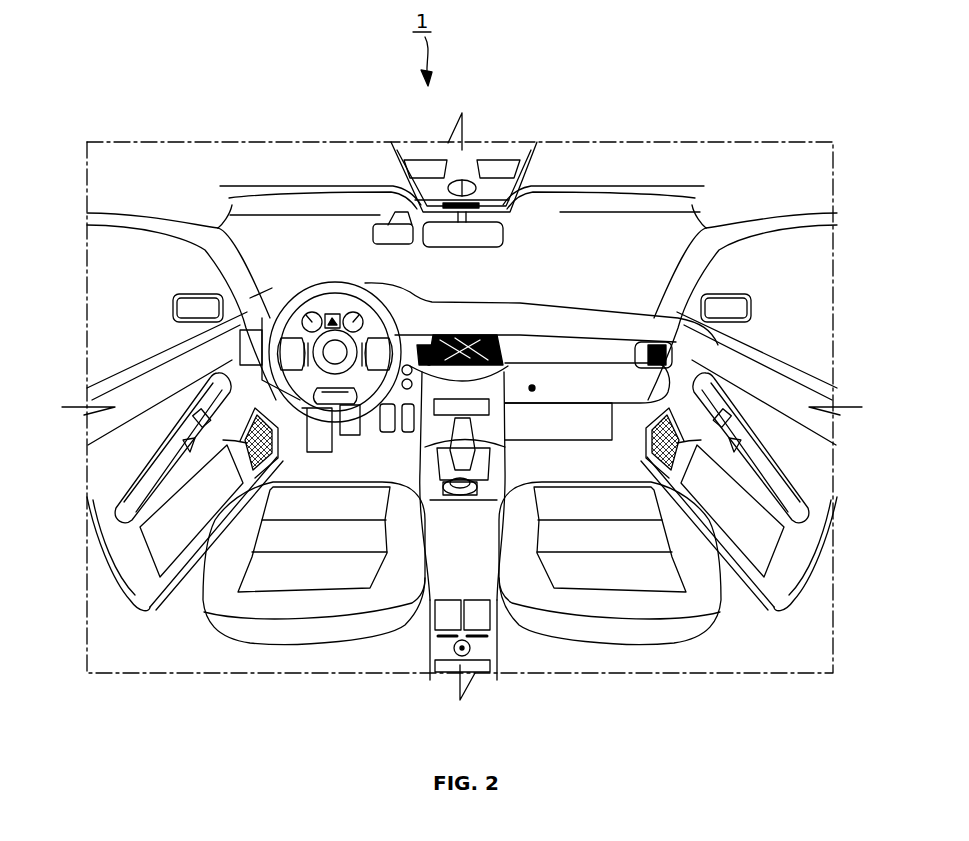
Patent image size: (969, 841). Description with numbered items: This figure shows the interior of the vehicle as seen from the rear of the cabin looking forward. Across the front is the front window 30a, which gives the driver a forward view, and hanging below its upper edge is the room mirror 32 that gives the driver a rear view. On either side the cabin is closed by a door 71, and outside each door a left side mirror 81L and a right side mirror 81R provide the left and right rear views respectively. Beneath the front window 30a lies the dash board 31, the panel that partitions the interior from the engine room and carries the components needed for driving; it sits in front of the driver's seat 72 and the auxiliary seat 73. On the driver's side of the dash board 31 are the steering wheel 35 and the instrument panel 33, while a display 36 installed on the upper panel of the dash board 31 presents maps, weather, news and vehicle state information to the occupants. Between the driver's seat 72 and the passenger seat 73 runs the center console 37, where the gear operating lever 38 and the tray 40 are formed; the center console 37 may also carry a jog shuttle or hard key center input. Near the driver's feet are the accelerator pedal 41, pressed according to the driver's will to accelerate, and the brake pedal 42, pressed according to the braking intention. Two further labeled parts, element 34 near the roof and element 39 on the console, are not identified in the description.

The front window 30a is at (545, 222).
The dash board 31 is at (603, 316).
The room mirror 32 is at (454, 247).
The instrument panel 33 is at (313, 300).
The roof 34 is at (280, 156).
The steering wheel 35 is at (350, 298).
The display 36 is at (478, 333).
The center console 37 is at (489, 407).
The gear operating lever 38 is at (496, 442).
The rotary controller 39 is at (478, 488).
The tray 40 is at (472, 563).
The accelerator pedal 41 is at (406, 433).
The brake pedal 42 is at (362, 436).
The door 71 is at (103, 455).
The driver's seat 72 is at (292, 635).
The auxiliary seat 73 is at (620, 635).
The left side mirror 81L is at (173, 308).
The right side mirror 81R is at (751, 308).